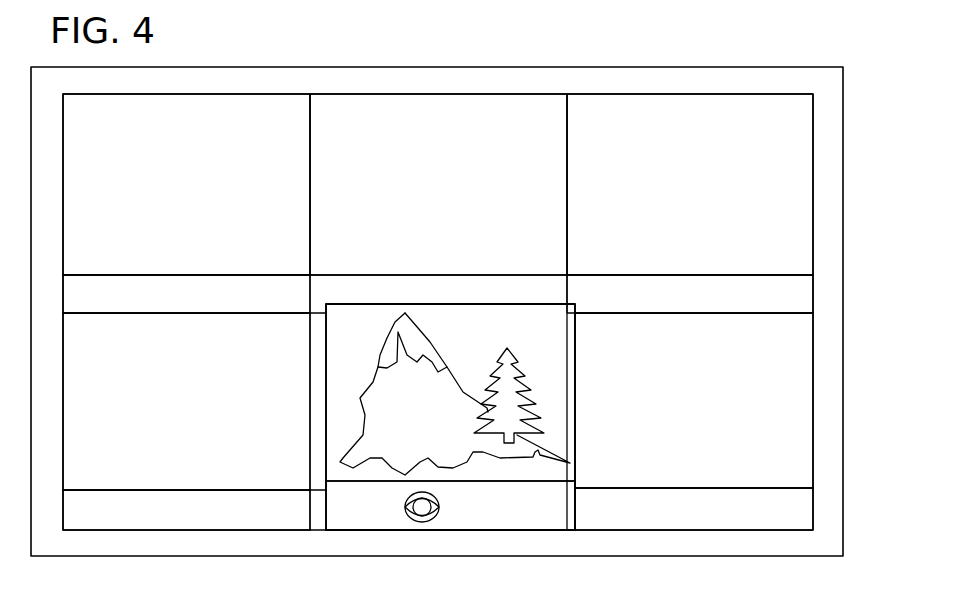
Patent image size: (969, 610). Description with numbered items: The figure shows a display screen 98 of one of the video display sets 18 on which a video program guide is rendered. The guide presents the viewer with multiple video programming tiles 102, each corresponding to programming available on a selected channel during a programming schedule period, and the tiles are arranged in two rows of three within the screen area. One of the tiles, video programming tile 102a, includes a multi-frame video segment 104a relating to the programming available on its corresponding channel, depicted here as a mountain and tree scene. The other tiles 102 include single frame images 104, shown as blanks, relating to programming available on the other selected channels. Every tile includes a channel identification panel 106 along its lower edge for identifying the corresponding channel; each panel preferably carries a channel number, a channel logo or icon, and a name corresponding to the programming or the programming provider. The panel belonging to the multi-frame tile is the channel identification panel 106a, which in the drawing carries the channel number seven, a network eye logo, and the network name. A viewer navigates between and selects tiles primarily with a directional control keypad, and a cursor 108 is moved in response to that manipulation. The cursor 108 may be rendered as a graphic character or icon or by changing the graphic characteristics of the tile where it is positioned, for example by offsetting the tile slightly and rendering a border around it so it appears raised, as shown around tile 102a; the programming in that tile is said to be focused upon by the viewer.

The video display set 18 is at (832, 192).
The display screen 98 is at (813, 452).
The video programming tile 102 is at (192, 533).
The video programming tile with multi-frame video segment 102a is at (450, 453).
The single frame image 104 is at (147, 199).
The multi-frame video segment 104a is at (382, 335).
The channel identification panel 106 is at (227, 285).
The channel identification panel of the multi-frame tile 106a is at (402, 487).
The cursor 108 is at (317, 358).